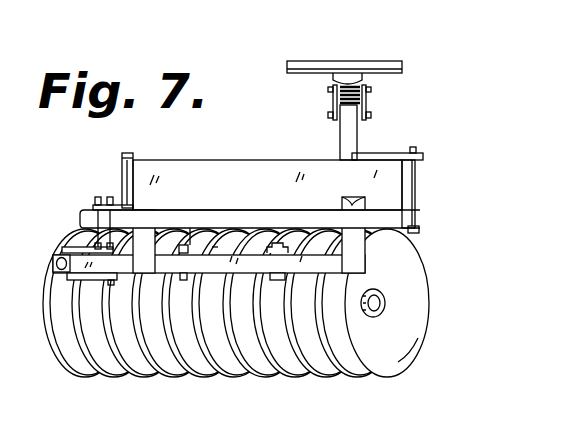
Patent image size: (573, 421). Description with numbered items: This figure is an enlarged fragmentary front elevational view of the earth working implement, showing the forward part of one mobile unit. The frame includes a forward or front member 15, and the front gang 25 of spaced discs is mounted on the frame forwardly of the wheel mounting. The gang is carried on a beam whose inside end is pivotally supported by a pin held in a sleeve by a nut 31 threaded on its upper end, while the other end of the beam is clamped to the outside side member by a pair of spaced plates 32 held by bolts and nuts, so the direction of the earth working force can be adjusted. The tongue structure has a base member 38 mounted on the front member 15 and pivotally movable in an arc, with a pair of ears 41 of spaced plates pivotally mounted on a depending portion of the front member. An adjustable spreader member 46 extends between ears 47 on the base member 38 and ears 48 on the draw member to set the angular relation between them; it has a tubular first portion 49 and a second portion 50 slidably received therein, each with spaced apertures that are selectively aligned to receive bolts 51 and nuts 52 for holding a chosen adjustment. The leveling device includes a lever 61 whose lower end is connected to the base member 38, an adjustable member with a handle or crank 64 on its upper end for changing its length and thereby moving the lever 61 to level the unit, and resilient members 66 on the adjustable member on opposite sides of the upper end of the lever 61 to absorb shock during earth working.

The forward or front member 15 is at (262, 166).
The front gang 25 is at (305, 216).
The nut 31 is at (130, 156).
The spaced plates 32 is at (410, 118).
The base member 38 is at (314, 273).
The pair of ears 41 is at (403, 265).
The adjustable spreader member 46 is at (215, 253).
The ears 47 is at (277, 248).
The ears 48 is at (79, 238).
The tubular first portion 49 is at (149, 274).
The second portion 50 is at (228, 276).
The bolts 51 is at (186, 275).
The nuts 52 is at (188, 245).
The lever 61 is at (358, 133).
The handle or crank 64 is at (332, 32).
The resilient members 66 is at (338, 100).